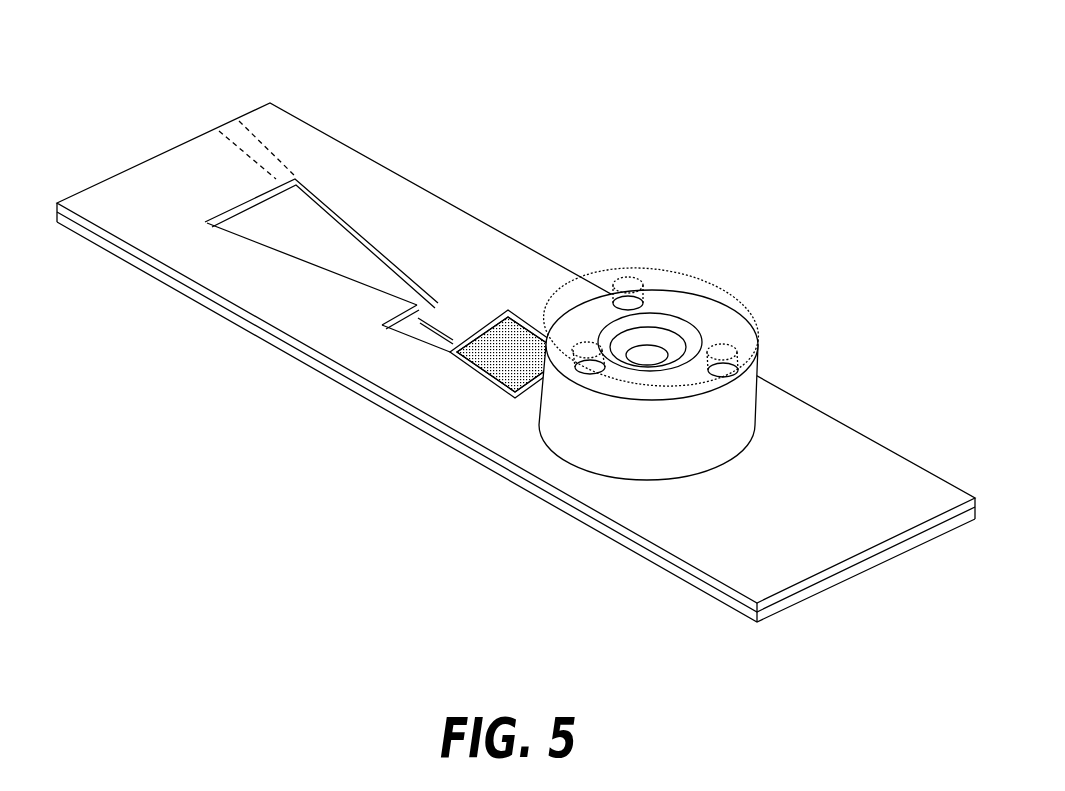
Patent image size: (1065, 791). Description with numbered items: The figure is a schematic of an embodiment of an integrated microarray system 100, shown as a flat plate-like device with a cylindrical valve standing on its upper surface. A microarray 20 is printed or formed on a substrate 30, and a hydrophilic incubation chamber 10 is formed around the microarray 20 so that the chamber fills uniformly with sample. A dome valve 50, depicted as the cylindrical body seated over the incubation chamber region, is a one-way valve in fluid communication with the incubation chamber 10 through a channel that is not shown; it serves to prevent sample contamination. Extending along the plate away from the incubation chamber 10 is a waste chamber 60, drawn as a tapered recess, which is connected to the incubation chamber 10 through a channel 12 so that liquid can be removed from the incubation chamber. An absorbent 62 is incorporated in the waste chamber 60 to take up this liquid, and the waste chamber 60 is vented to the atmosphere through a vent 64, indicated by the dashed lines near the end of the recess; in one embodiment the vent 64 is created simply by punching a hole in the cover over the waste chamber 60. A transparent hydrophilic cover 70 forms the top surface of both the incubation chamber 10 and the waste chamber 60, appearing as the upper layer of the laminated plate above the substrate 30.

The integrated microarray system 100 is at (143, 493).
The hydrophilic incubation chamber 10 is at (476, 352).
The channel 12 is at (410, 329).
The microarray 20 is at (513, 343).
The substrate 30 is at (728, 596).
The dome valve 50 is at (685, 342).
The waste chamber 60 is at (323, 245).
The absorbent 62 is at (360, 260).
The vent 64 is at (248, 111).
The transparent hydrophilic cover 70 is at (978, 500).